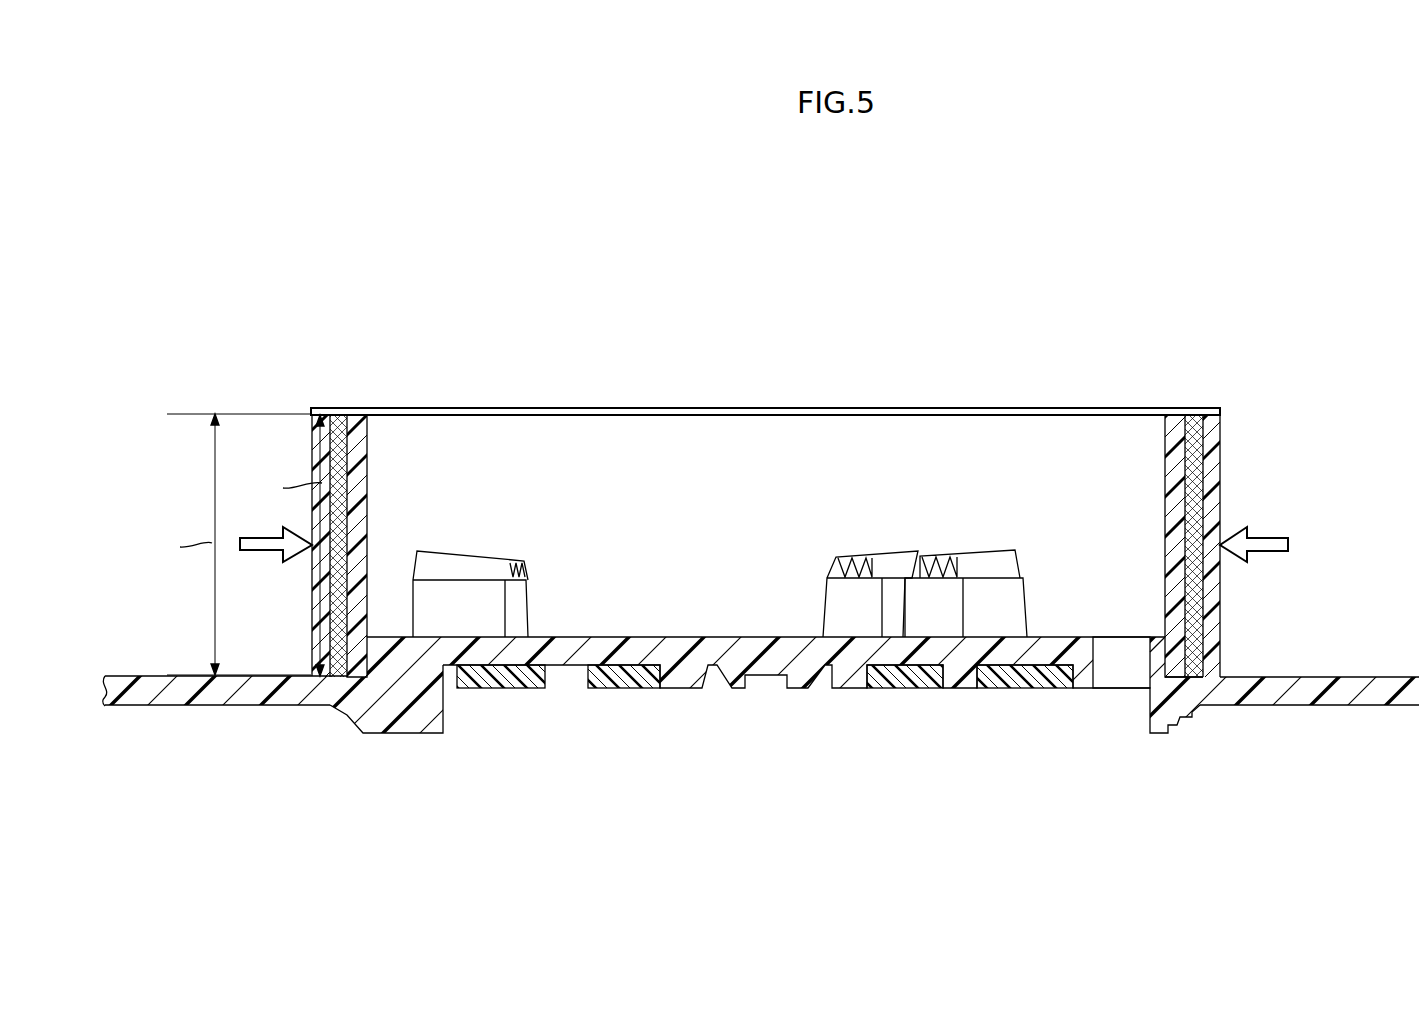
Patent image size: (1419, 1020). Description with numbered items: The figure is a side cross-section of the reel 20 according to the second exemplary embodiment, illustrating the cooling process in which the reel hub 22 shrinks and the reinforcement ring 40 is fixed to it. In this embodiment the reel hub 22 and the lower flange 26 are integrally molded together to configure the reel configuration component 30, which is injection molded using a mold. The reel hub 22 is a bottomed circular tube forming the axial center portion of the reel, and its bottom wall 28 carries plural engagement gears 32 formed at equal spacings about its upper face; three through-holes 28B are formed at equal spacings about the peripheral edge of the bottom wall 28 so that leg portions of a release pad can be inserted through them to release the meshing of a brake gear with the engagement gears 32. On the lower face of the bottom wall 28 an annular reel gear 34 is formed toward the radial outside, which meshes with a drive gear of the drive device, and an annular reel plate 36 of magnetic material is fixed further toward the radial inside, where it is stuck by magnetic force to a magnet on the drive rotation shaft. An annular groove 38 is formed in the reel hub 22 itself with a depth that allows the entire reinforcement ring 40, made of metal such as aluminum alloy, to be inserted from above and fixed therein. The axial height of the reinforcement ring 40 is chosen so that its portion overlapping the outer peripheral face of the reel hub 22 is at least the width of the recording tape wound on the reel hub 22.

The reel 20 is at (1202, 360).
The reel hub 22 is at (1222, 497).
The lower flange 26 is at (1358, 676).
The bottom wall 28 is at (712, 636).
The through-holes 28B is at (1120, 678).
The reel configuration component 30 is at (768, 406).
The engagement gears 32 is at (470, 553).
The reel gear 34 is at (410, 733).
The reel plate 36 is at (903, 689).
The groove 38 is at (1194, 469).
The reinforcement ring 40 is at (338, 412).